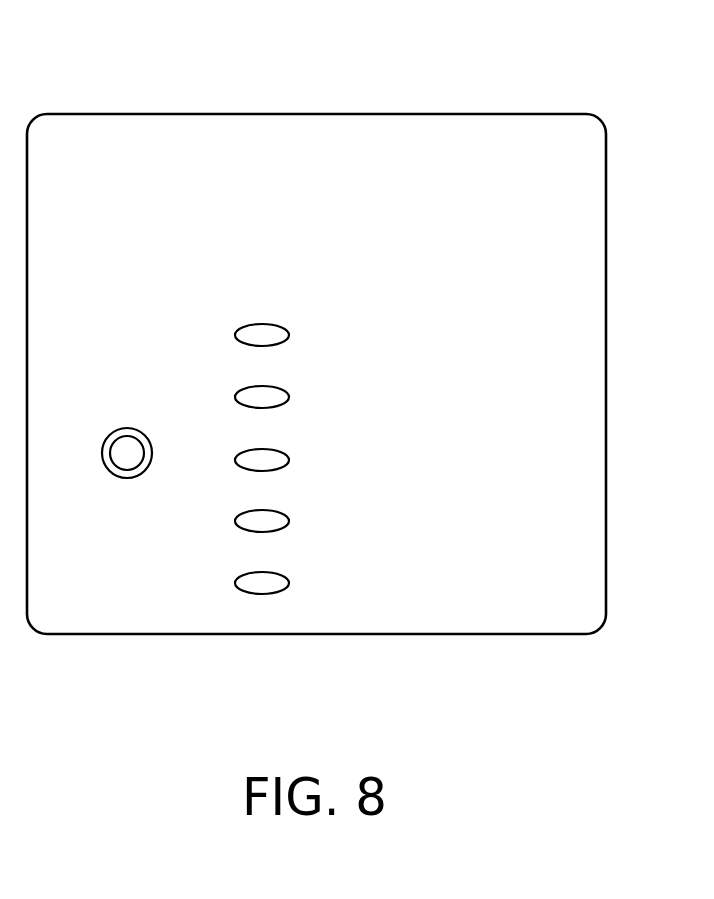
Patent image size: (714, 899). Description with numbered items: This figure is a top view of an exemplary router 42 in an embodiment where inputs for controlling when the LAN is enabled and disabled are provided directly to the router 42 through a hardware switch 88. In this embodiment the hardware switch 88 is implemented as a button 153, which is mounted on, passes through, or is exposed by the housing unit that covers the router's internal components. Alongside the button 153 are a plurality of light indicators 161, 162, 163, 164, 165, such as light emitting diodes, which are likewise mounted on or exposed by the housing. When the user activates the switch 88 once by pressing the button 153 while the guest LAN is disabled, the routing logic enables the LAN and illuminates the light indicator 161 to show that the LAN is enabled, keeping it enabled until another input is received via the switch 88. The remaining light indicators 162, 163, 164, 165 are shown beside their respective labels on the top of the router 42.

The router 42 is at (552, 43).
The hardware switch 88 is at (157, 493).
The button 153 is at (125, 442).
The light indicator 161 is at (262, 324).
The light indicator 162 is at (262, 386).
The light indicator 163 is at (262, 449).
The light indicator 164 is at (262, 510).
The light indicator 165 is at (262, 572).